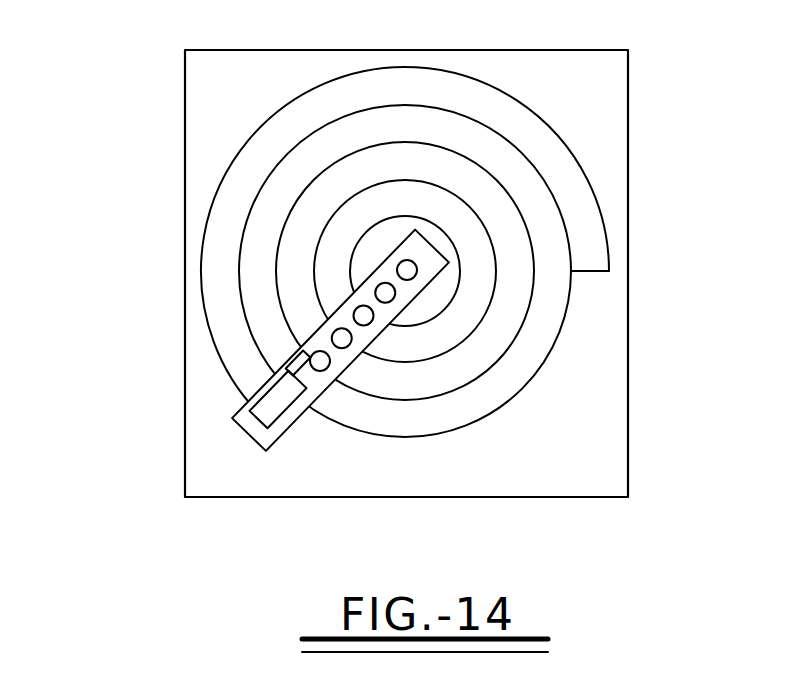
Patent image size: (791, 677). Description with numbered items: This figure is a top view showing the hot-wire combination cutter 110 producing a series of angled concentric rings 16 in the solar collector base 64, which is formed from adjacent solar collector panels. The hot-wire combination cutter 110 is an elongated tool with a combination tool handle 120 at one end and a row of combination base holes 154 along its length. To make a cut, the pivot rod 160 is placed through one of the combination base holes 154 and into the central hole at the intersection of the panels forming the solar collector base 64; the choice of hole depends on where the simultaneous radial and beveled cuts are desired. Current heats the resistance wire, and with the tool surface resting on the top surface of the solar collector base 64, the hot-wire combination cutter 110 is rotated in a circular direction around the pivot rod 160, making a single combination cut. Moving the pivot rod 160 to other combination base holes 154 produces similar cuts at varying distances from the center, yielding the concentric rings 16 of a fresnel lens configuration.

The solar collector base 64 is at (207, 110).
The concentric rings 16 is at (562, 220).
The hot-wire combination cutter 110 is at (232, 402).
The combination tool handle 120 is at (305, 368).
The combination base holes 154 is at (352, 341).
The pivot rod 160 is at (417, 269).